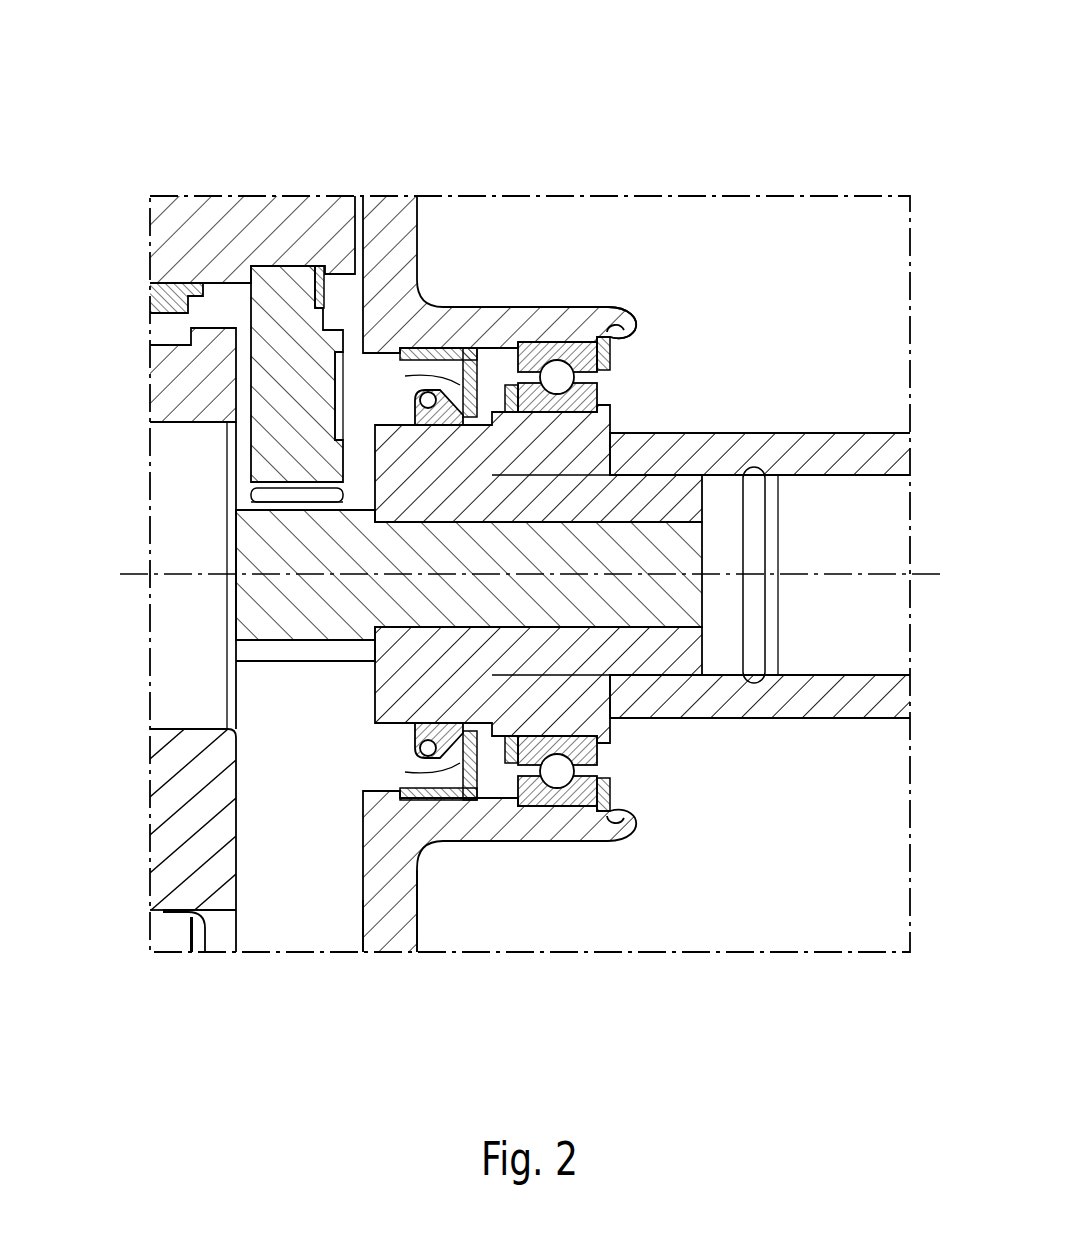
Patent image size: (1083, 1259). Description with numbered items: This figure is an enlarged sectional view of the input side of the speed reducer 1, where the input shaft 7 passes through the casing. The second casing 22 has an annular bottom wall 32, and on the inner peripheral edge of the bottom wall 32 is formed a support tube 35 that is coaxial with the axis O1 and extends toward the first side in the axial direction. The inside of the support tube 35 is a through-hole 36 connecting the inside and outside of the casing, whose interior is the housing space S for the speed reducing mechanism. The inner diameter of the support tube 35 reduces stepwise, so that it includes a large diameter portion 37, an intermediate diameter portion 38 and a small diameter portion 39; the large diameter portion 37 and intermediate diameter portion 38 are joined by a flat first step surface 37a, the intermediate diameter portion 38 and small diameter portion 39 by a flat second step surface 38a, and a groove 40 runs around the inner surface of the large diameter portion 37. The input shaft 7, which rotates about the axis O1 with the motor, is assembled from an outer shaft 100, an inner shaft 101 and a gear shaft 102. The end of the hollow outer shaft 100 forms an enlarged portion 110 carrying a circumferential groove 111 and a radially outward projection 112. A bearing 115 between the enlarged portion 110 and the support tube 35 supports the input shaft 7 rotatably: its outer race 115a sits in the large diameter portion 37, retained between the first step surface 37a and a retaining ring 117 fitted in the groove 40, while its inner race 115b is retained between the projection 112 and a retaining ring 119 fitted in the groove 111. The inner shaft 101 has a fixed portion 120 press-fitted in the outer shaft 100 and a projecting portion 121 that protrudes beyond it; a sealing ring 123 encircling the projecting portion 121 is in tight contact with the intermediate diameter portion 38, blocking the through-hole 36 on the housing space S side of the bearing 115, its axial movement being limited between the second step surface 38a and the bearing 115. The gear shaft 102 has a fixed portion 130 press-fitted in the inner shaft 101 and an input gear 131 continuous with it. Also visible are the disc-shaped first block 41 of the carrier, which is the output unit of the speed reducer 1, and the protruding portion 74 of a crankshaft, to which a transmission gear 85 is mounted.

The speed reducer 1 is at (808, 122).
The protruding portion 74 is at (232, 204).
The transmission gear 85 is at (242, 314).
The enlarged portion 110 is at (237, 402).
The projecting portion 121 is at (387, 448).
The sealing ring 123 is at (332, 288).
The retaining ring 119 is at (470, 343).
The gear shaft 102 is at (378, 490).
The fixed portion 120 is at (693, 502).
The input gear 131 is at (245, 605).
The projection 112 is at (608, 402).
The fixed portion 130 is at (600, 612).
The outer shaft 100 is at (868, 440).
The input shaft 7 is at (803, 424).
The inner shaft 101 is at (670, 688).
The inner race 115b is at (782, 470).
The support tube 35 is at (621, 292).
The large diameter portion 37 is at (603, 305).
The first step surface 37a is at (548, 330).
The groove 40 is at (612, 331).
The retaining ring 117 is at (617, 355).
The bearing 115 is at (610, 380).
The outer race 115a is at (566, 345).
The groove 111 is at (511, 385).
The small diameter portion 39 is at (420, 352).
The intermediate diameter portion 38 is at (450, 368).
The second step surface 38a is at (435, 362).
The second casing 22 is at (432, 923).
The bottom wall 32 is at (397, 943).
The through-hole 36 is at (494, 790).
The first block 41 is at (182, 897).
The housing space S is at (299, 912).
The axis O1 is at (935, 573).